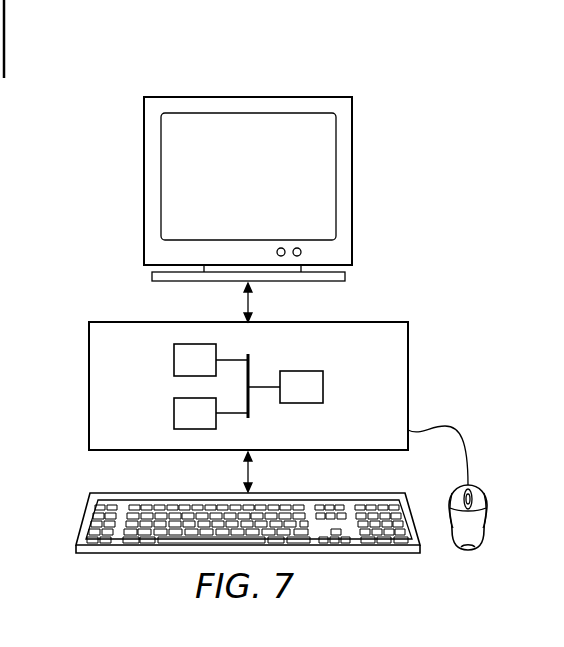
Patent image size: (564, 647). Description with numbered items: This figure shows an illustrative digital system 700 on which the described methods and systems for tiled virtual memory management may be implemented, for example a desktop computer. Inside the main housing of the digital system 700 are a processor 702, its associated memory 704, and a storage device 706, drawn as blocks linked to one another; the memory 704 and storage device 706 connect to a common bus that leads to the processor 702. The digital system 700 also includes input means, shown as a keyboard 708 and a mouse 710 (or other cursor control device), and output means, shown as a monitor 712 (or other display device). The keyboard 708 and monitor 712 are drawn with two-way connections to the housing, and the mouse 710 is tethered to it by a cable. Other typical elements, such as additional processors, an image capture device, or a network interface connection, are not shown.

The digital system 700 is at (182, 71).
The processor 702 is at (323, 380).
The memory 704 is at (173, 352).
The storage device 706 is at (173, 418).
The keyboard 708 is at (85, 515).
The mouse 710 is at (470, 551).
The monitor 712 is at (268, 193).